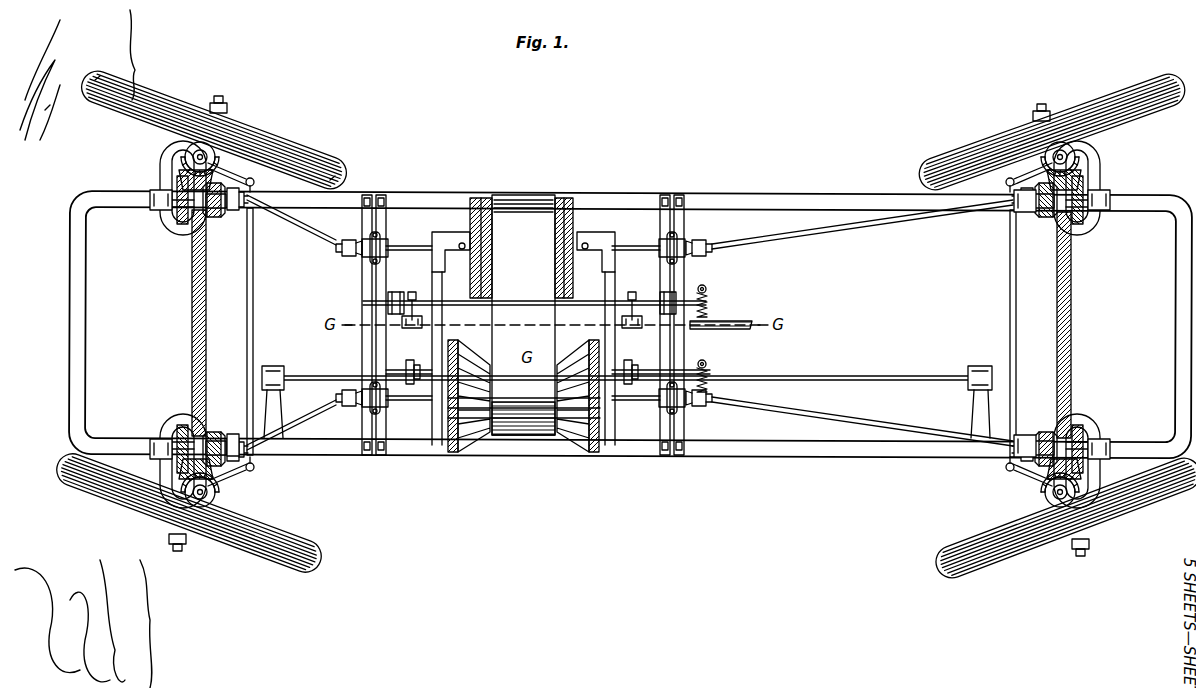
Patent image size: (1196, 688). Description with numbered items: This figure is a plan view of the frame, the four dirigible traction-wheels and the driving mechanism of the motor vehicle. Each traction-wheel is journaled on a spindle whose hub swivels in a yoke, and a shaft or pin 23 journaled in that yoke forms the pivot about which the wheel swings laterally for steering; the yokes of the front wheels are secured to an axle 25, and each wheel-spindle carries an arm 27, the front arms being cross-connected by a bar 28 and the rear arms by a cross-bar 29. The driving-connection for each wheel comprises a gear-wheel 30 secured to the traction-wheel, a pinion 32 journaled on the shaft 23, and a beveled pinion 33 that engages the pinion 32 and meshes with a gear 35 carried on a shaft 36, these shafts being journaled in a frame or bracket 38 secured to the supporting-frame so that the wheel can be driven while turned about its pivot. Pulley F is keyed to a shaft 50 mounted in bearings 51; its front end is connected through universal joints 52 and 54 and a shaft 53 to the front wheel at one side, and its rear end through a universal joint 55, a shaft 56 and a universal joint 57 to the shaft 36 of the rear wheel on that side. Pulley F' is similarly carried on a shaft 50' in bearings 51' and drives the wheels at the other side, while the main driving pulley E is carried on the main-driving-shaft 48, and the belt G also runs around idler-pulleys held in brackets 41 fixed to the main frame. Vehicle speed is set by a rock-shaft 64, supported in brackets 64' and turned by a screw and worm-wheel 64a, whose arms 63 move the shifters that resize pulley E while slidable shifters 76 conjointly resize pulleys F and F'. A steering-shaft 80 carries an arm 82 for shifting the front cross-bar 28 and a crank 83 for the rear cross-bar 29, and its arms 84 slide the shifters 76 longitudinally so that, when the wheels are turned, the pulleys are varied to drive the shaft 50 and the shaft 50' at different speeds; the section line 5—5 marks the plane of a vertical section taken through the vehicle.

The wheel 5 is at (214, 130).
The shaft or pin 23 is at (199, 150).
The axle 25 is at (193, 325).
The arm 27 is at (242, 165).
The bar 28 is at (1010, 334).
The cross-bar 29 is at (247, 314).
The gear-wheel 30 is at (165, 130).
The pinion 32 is at (184, 153).
The beveled pinion 33 is at (180, 178).
The gear 35 is at (205, 230).
The shaft 36 is at (208, 208).
The frame 38 is at (156, 205).
The brackets 41 is at (480, 198).
The main-driving-shaft 48 is at (742, 332).
The shaft 50 is at (657, 202).
The shaft 50' is at (409, 453).
The bearings 51 is at (552, 209).
The bearings 51' is at (498, 381).
The universal joint 52 is at (712, 254).
The shaft 53 is at (805, 234).
The universal joint 54 is at (1012, 214).
The universal joint 55 is at (346, 257).
The shaft 56 is at (300, 236).
The universal joint 57 is at (235, 215).
The arm 63 is at (408, 306).
The rock-shaft 64 is at (534, 289).
The brackets 64' is at (507, 320).
The screw and worm-wheel 64a is at (712, 300).
The shifter 76 is at (440, 232).
The steering-shaft 80 is at (283, 372).
The arm 82 is at (993, 380).
The crank 83 is at (262, 380).
The arms 84 is at (408, 360).